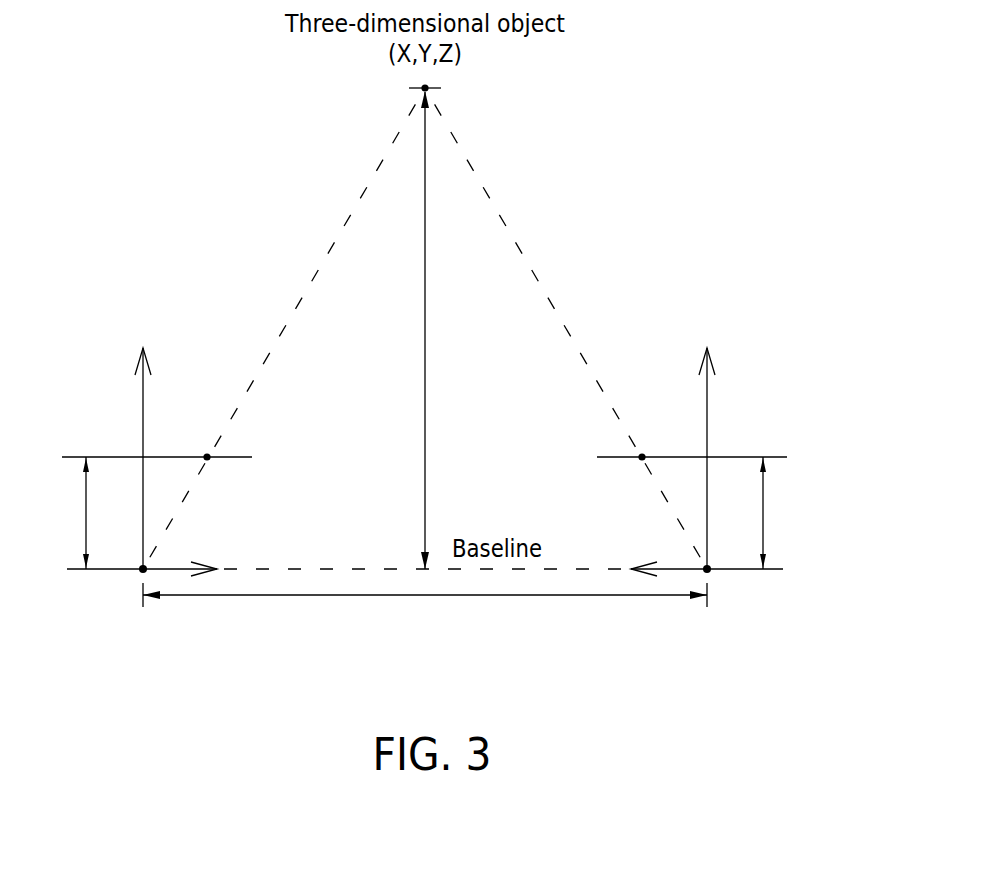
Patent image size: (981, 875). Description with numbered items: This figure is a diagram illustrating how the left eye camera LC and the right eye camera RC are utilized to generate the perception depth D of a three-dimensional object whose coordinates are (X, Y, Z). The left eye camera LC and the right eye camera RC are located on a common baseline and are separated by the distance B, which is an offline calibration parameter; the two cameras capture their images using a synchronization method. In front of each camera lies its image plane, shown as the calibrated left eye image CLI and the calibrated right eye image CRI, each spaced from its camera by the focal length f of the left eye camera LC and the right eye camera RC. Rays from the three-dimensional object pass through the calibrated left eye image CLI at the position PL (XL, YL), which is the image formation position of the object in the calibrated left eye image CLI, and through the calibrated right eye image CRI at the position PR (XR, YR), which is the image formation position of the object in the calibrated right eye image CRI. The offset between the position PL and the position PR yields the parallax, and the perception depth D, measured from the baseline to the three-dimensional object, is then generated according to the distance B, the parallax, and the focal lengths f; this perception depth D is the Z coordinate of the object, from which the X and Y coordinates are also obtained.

The left eye camera LC is at (95, 505).
The right eye camera RC is at (761, 505).
The calibrated left eye image CLI is at (134, 457).
The calibrated right eye image CRI is at (717, 457).
The position PL (XL, YL) PL is at (203, 459).
The position PR (XR, YR) PR is at (646, 459).
The perception depth D is at (434, 330).
The distance between the left eye camera and the right eye camera B is at (425, 608).
The focal length f is at (424, 513).